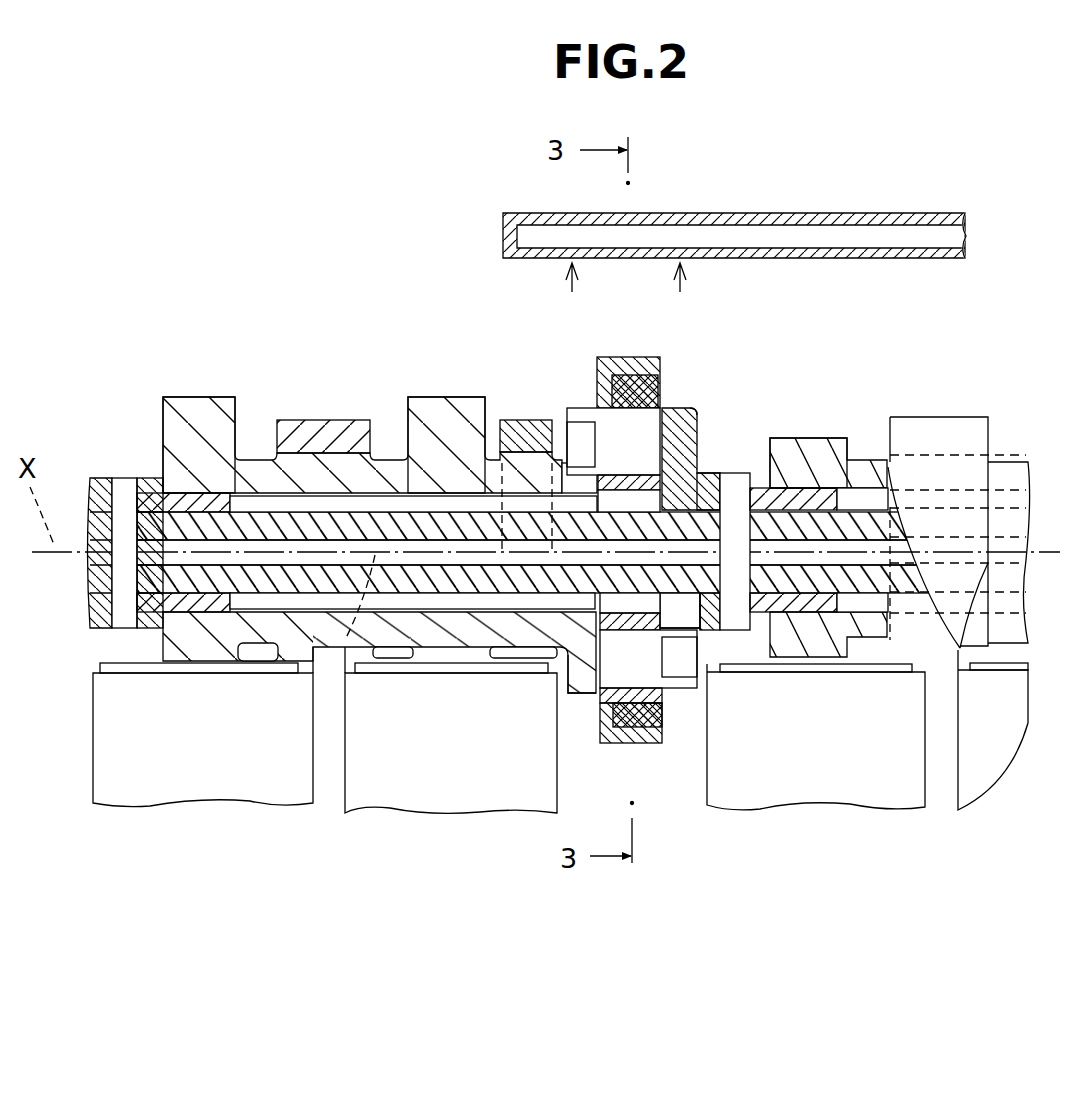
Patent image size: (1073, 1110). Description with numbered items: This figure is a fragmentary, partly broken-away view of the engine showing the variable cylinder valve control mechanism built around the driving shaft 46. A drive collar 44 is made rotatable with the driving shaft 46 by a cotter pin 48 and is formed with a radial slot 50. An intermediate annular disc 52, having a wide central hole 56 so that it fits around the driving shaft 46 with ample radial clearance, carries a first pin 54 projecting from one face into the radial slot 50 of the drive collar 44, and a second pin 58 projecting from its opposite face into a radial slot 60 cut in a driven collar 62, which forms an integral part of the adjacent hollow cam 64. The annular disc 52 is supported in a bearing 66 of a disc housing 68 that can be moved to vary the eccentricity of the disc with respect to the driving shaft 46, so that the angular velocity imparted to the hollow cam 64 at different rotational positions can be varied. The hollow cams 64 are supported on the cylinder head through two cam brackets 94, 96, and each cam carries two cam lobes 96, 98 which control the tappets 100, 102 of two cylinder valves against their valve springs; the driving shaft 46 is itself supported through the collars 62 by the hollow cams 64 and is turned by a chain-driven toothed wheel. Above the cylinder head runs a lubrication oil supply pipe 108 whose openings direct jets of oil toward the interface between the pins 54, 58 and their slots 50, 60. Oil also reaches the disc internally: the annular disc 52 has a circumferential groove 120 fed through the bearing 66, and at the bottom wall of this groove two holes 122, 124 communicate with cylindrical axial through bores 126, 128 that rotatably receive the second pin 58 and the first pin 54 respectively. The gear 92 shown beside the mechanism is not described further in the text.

The drive collar 44 is at (105, 478).
The driving shaft 46 is at (263, 510).
The cotter pin 48 is at (755, 470).
The radial slot 50 is at (700, 618).
The annular disc 52 is at (668, 408).
The first pin 54 is at (657, 673).
The central hole 56 is at (700, 470).
The second pin 58 is at (647, 466).
The radial slot 60 is at (567, 487).
The driven collar 62 is at (580, 695).
The hollow cam 64 is at (158, 428).
The bearing 66 is at (680, 718).
The disc housing 68 is at (622, 357).
The gear 92 is at (328, 420).
The cam bracket 94 is at (525, 420).
The cam bracket / cam lobe 96 is at (205, 397).
The cam lobe 98 is at (450, 397).
The tappet 100 is at (245, 746).
The tappet 102 is at (1018, 719).
The lubrication oil supply pipe 108 is at (905, 213).
The circumferential groove 120 is at (660, 357).
The hole 122 is at (595, 400).
The hole 124 is at (640, 743).
The axial through bore 126 is at (690, 408).
The axial through bore 128 is at (598, 655).